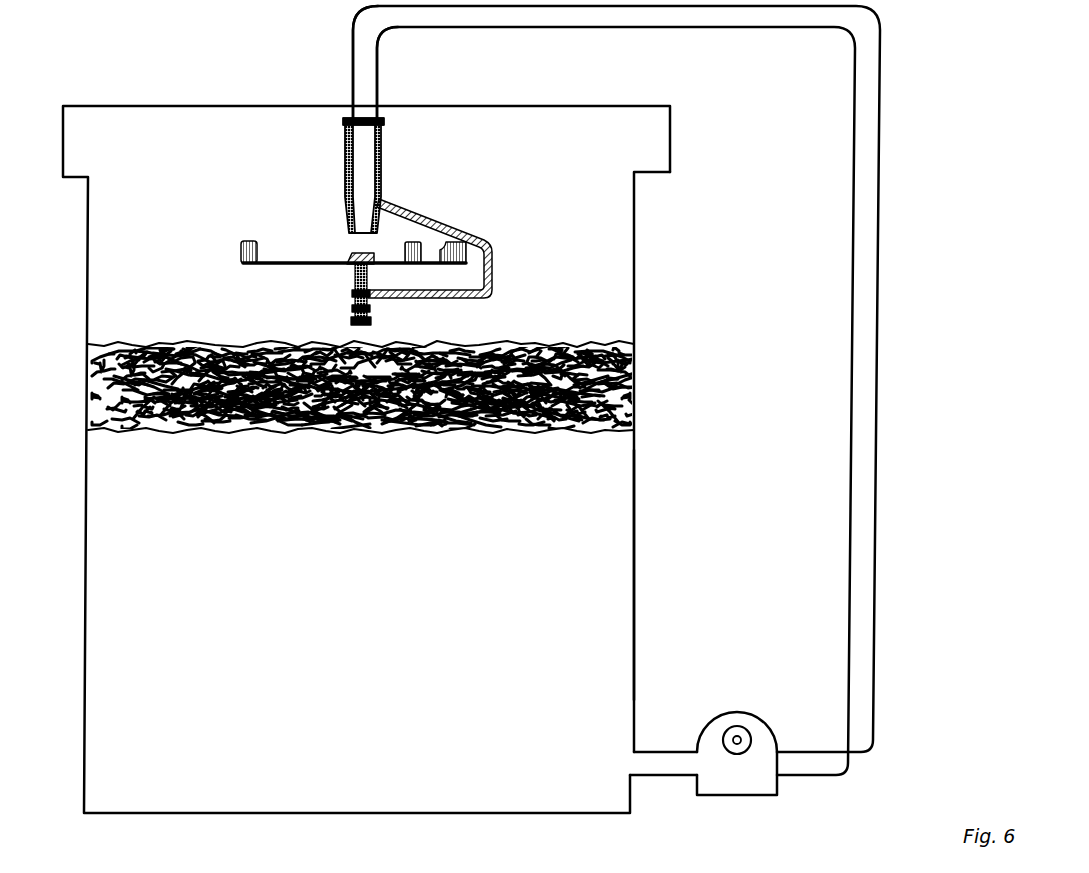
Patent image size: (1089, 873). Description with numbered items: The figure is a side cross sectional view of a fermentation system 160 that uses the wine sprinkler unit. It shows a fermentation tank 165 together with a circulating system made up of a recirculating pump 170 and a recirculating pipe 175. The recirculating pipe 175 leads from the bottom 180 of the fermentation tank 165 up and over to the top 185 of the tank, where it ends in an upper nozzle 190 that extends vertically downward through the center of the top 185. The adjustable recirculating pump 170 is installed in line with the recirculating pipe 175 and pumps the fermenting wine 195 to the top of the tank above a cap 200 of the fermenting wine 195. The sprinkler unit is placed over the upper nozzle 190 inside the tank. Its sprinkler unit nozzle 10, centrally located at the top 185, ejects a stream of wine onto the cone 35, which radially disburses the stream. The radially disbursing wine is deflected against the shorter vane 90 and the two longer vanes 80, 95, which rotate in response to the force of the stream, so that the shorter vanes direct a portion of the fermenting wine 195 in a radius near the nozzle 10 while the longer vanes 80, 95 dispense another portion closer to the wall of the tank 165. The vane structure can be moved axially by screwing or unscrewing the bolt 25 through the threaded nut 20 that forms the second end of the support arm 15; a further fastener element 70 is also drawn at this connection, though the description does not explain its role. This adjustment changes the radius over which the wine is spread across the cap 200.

The sprinkler unit nozzle 10 is at (360, 167).
The support arm 15 is at (462, 232).
The threaded nut 20 is at (355, 305).
The bolt 25 is at (370, 320).
The cone 35 is at (350, 258).
The fastener 70 is at (355, 300).
The longer vane 80 is at (241, 247).
The shorter vane 90 is at (402, 250).
The longer vane 95 is at (466, 256).
The fermentation system 160 is at (905, 428).
The fermentation tank 165 is at (634, 592).
The recirculating pump 170 is at (752, 777).
The recirculating pipe 175 is at (876, 263).
The bottom of the fermentation tank 180 is at (630, 760).
The top of the fermentation tank 185 is at (368, 100).
The upper nozzle 190 is at (354, 110).
The fermenting wine 195 is at (598, 518).
The cap 200 is at (634, 380).